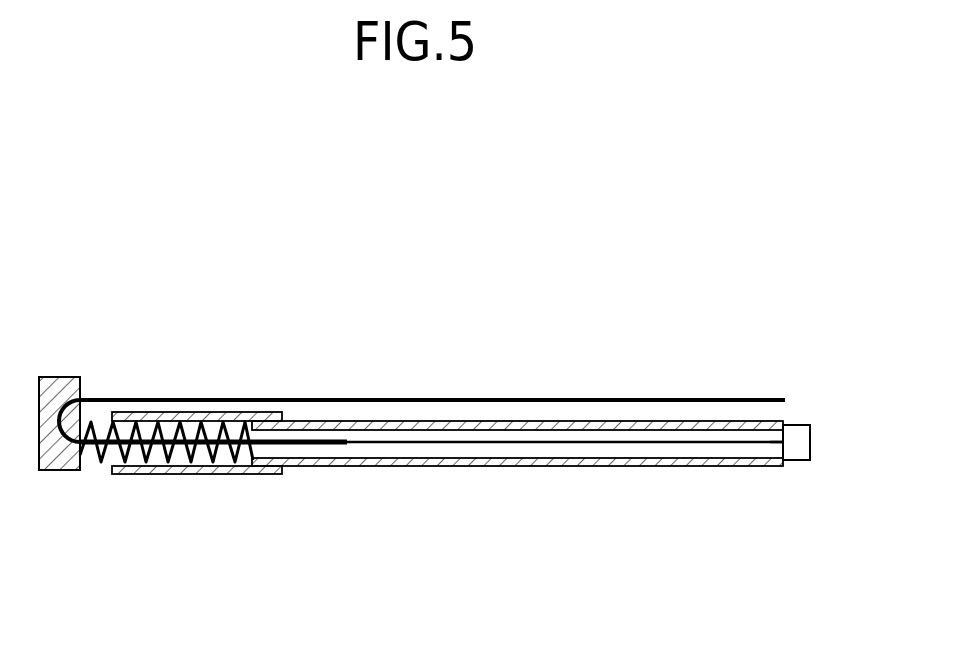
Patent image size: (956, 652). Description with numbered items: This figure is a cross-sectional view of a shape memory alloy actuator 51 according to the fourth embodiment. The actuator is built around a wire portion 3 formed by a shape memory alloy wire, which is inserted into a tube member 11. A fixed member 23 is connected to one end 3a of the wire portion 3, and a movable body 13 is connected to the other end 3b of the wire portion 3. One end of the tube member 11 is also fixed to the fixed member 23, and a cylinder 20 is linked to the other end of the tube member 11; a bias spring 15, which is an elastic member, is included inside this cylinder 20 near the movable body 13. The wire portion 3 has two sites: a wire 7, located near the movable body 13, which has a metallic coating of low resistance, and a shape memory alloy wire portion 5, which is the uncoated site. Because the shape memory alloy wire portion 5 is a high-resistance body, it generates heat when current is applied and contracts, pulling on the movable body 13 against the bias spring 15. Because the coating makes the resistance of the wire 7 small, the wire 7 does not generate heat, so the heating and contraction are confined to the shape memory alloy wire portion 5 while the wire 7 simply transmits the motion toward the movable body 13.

The wire portion 3 is at (313, 547).
The one end of the wire portion 3a is at (780, 442).
The other end of the wire portion 3b is at (90, 455).
The shape memory alloy wire portion 5 is at (603, 458).
The wire 7 is at (326, 446).
The tube member 11 is at (581, 400).
The movable body 13 is at (53, 377).
The bias spring 15 is at (103, 462).
The cylinder 20 is at (172, 412).
The fixed member 23 is at (798, 437).
The shape memory alloy actuator 51 is at (655, 335).